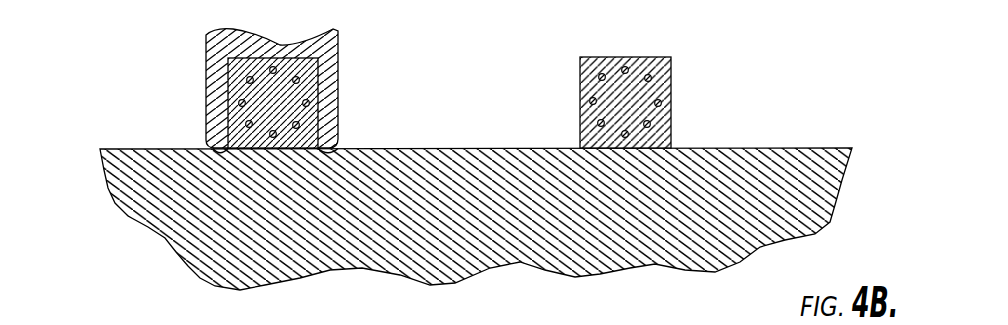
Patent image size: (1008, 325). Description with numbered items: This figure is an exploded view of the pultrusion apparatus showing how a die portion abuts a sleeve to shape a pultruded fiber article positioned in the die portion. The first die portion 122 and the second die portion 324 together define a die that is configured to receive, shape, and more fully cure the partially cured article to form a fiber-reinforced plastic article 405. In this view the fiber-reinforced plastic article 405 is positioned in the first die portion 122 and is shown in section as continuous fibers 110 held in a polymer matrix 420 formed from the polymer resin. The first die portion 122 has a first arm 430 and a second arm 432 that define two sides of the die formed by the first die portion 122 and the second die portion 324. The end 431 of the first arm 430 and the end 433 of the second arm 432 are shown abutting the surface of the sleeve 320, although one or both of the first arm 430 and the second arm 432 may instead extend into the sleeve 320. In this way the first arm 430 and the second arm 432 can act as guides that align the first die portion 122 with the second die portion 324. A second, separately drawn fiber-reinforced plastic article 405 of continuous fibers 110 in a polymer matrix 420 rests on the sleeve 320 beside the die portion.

The continuous fibers 110 is at (233, 149).
The first die portion 122 is at (338, 74).
The sleeve 320 is at (471, 108).
The second die portion 324 is at (249, 128).
The fiber-reinforced plastic article 405 is at (667, 68).
The polymer matrix 420 is at (283, 110).
The first arm 430 is at (215, 128).
The end of the first arm 431 is at (200, 153).
The second arm 432 is at (334, 132).
The end of the second arm 433 is at (338, 151).